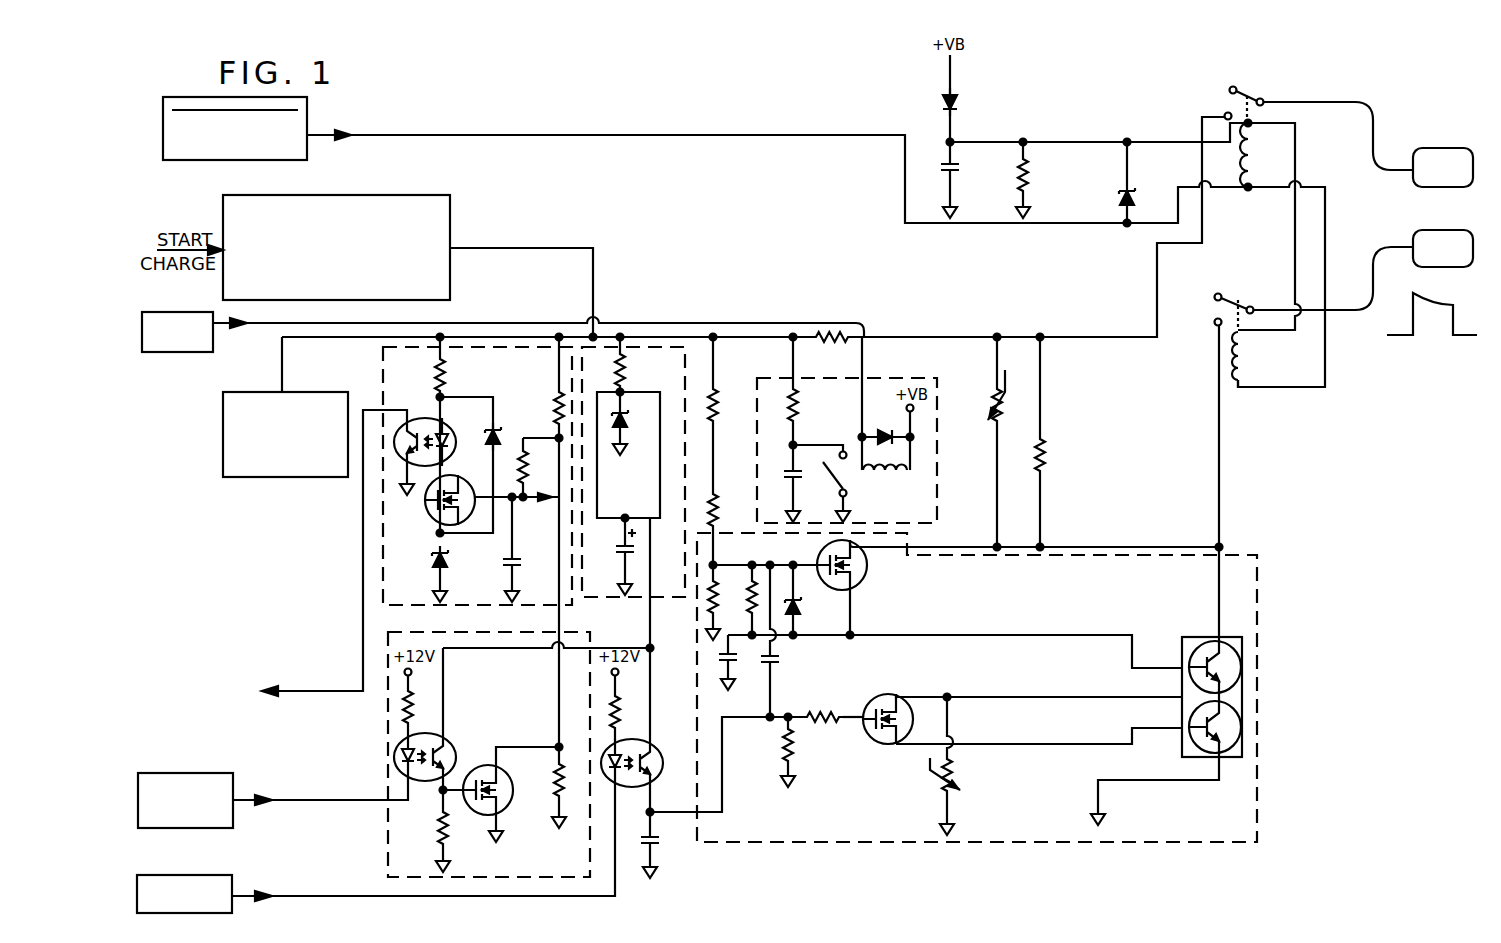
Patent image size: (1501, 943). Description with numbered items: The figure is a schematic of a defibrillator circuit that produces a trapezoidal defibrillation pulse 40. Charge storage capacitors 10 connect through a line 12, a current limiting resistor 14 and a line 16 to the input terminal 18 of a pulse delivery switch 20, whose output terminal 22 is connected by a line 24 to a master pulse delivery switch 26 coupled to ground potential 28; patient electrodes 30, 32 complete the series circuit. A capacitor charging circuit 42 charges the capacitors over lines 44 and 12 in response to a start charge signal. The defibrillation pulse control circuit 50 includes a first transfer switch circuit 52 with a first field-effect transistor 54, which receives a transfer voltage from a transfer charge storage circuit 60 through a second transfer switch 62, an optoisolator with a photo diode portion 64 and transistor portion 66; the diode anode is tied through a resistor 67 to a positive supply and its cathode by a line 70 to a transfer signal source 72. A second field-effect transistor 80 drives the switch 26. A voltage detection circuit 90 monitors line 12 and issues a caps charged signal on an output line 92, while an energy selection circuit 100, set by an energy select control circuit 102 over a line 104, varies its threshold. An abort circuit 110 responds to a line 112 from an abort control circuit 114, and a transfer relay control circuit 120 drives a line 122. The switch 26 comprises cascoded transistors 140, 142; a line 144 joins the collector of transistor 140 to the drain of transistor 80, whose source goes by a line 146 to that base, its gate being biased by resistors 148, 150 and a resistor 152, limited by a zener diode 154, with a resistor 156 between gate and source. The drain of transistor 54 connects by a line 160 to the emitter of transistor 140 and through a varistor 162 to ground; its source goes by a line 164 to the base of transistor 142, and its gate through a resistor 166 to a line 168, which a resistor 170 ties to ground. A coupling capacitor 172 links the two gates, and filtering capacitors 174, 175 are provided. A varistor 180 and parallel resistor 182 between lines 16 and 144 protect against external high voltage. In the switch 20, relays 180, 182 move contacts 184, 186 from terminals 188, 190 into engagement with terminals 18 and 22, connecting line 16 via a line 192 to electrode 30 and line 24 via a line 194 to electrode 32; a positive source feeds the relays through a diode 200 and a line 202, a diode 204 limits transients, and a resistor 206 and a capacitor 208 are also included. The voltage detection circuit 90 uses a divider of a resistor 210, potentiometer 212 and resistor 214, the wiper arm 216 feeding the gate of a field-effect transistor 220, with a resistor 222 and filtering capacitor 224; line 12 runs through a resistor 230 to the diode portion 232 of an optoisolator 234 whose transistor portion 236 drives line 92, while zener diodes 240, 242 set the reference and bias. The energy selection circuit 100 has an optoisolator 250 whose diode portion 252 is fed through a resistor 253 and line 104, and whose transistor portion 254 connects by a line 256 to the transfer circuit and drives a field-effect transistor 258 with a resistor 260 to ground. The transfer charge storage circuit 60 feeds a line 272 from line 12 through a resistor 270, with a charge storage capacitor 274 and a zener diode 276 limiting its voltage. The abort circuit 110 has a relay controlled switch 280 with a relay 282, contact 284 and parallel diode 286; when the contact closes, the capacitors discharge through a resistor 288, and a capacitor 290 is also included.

The charge storage capacitors 10 is at (228, 477).
The line 12 is at (330, 338).
The current limiting resistor 14 is at (827, 326).
The line 16 is at (974, 330).
The input terminal 18 is at (1225, 113).
The pulse delivery switch 20 is at (1241, 260).
The output terminal 22 is at (1215, 325).
The line 24 is at (1222, 450).
The master pulse delivery switch 26 is at (1226, 696).
The ground potential 28 is at (1105, 816).
The patient electrode 30 is at (1450, 148).
The patient electrode 32 is at (1445, 230).
The trapezoidal waveform defibrillation pulse 40 is at (1413, 322).
The capacitor charging circuit 42 is at (450, 213).
The line 44 is at (594, 268).
The defibrillation pulse control circuit 50 is at (889, 818).
The first transfer switch circuit 52 is at (872, 752).
The first field-effect transistor 54 is at (888, 688).
The transfer charge storage circuit 60 is at (664, 348).
The second transfer switch 62 is at (670, 730).
The photo diode portion 64 is at (605, 752).
The photo responsive transistor portion 66 is at (668, 802).
The resistor 67 is at (618, 718).
The line 70 is at (375, 895).
The transfer signal source 72 is at (218, 875).
The second field-effect transistor 80 is at (863, 570).
The voltage detection circuit 90 is at (396, 572).
The output line 92 is at (311, 690).
The energy selection circuit 100 is at (392, 735).
The energy select control circuit 102 is at (215, 773).
The line 104 is at (318, 802).
The abort circuit 110 is at (879, 391).
The line 112 is at (488, 323).
The abort control circuit 114 is at (170, 352).
The transfer relay control circuit 120 is at (303, 160).
The line 122 is at (513, 135).
The transistor 140 is at (1250, 657).
The transistor 142 is at (1248, 738).
The line 144 is at (1103, 545).
The line 146 is at (1063, 634).
The resistor 148 is at (714, 505).
The resistor 150 is at (714, 408).
The resistor 152 is at (700, 604).
The zener diode 154 is at (800, 598).
The resistor 156 is at (750, 578).
The line 160 is at (1000, 698).
The varistor 162 is at (953, 778).
The line 164 is at (1028, 747).
The resistor 166 is at (832, 722).
The line 168 is at (722, 814).
The resistor 170 is at (780, 748).
The coupling capacitor 172 is at (778, 660).
The filtering capacitor 174 is at (660, 850).
The filtering capacitor 175 is at (722, 657).
The varistor 180 is at (993, 428).
The resistor 182 is at (1047, 460).
The contact 184 is at (1256, 96).
The contact 186 is at (1232, 298).
The switch terminal 188 is at (1229, 88).
The switch terminal 190 is at (1214, 300).
The line 192 is at (1333, 100).
The line 194 is at (1375, 248).
The diode 200 is at (955, 108).
The line 202 is at (1058, 140).
The diode 204 is at (1133, 190).
The resistor 206 is at (1032, 183).
The capacitor 208 is at (956, 185).
The resistor 210 is at (553, 428).
The potentiometer 212 is at (560, 528).
The resistor 214 is at (542, 790).
The wiper arm 216 is at (522, 492).
The field-effect transistor 220 is at (437, 518).
The resistor 222 is at (503, 530).
The filtering capacitor 224 is at (516, 562).
The resistor 230 is at (445, 361).
The diode portion 232 is at (447, 428).
The optoisolator 234 is at (448, 452).
The transistor portion 236 is at (412, 452).
The zener diode 240 is at (446, 572).
The zener diode 242 is at (498, 425).
The optoisolator 250 is at (454, 748).
The diode portion 252 is at (392, 762).
The resistor 253 is at (397, 695).
The transistor portion 254 is at (447, 745).
The line 256 is at (487, 646).
The field-effect transistor 258 is at (482, 812).
The resistor 260 is at (449, 848).
The resistor 270 is at (630, 370).
The line 272 is at (650, 598).
The charge storage capacitor 274 is at (618, 548).
The zener diode 276 is at (630, 420).
The relay controlled switch 280 is at (922, 479).
The relay 282 is at (897, 468).
The relay controlled contact 284 is at (826, 475).
The diode 286 is at (912, 430).
The resistor 288 is at (806, 410).
The capacitor 290 is at (790, 468).